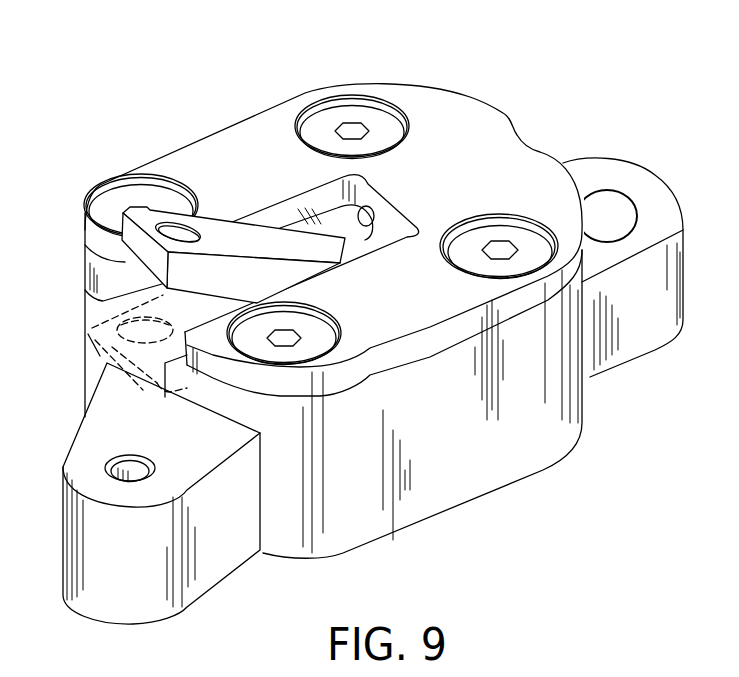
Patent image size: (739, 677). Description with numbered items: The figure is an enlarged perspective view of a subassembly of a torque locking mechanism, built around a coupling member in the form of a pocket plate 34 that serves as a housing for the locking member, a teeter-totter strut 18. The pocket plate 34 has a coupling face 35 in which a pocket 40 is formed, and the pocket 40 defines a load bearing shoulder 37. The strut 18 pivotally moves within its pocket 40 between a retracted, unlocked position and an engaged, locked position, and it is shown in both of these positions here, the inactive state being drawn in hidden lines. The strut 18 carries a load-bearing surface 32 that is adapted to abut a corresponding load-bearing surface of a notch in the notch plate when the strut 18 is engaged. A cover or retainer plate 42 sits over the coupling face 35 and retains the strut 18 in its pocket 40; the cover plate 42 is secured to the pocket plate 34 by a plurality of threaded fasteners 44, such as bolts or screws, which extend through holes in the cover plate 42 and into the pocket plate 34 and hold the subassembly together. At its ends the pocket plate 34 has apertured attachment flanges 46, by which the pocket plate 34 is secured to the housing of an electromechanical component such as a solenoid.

The strut 18 is at (198, 222).
The load-bearing surface 32 is at (133, 247).
The pocket plate 34 is at (439, 89).
The coupling face 35 is at (385, 358).
The load bearing shoulder 37 is at (368, 222).
The pocket 40 is at (87, 333).
The cover plate 42 is at (420, 352).
The threaded fasteners 44 is at (139, 193).
The attachment flanges 46 is at (653, 173).